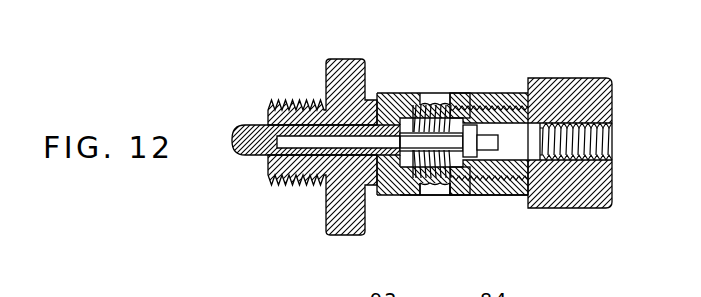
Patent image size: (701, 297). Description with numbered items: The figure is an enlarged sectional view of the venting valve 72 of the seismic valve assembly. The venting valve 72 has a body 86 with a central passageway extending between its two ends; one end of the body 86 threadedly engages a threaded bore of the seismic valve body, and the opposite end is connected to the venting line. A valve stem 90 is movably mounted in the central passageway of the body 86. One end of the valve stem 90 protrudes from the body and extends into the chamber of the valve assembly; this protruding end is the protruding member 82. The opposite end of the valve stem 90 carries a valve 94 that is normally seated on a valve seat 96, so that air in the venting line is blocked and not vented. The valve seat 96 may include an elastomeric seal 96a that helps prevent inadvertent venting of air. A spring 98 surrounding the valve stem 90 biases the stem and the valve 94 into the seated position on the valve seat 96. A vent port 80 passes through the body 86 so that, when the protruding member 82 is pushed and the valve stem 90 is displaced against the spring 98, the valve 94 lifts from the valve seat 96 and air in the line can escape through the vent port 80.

The venting valve 72 is at (513, 82).
The vent port 80 is at (432, 192).
The protruding member 82 is at (243, 124).
The body 86 is at (513, 196).
The valve stem 90 is at (373, 140).
The valve 94 is at (478, 94).
The valve seat 96 is at (463, 197).
The elastomeric seal 96a is at (453, 94).
The spring 98 is at (413, 104).